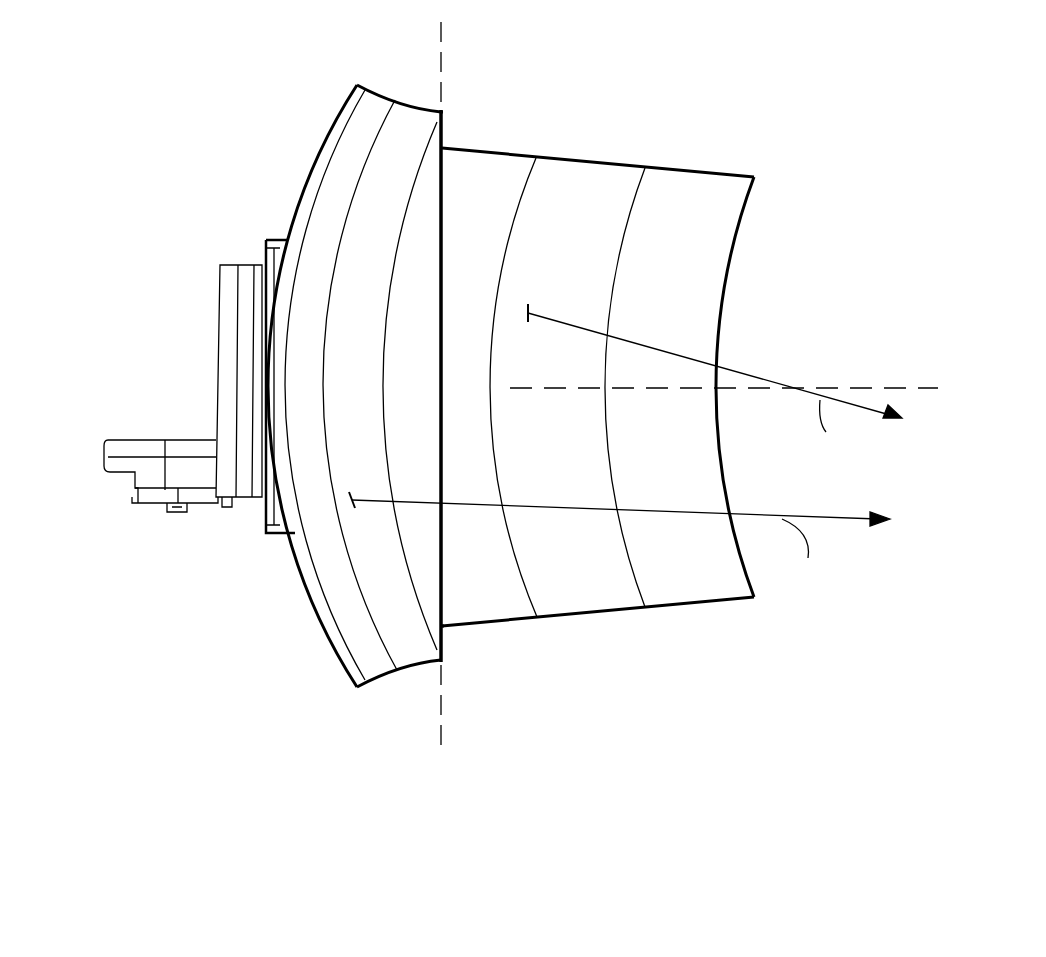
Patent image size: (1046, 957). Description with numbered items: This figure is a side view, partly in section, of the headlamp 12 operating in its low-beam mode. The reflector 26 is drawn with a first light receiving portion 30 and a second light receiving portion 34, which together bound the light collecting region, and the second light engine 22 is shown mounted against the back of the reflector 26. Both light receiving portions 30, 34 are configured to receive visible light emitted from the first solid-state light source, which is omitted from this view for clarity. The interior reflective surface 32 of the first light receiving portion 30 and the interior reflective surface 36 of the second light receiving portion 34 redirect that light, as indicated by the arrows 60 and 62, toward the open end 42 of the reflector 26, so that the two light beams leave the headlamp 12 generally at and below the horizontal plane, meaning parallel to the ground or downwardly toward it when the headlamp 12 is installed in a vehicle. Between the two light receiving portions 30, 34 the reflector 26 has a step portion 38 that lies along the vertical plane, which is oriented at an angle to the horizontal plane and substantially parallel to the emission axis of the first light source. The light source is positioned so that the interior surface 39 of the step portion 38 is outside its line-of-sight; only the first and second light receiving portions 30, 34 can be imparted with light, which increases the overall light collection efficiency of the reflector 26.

The headlamp 12 is at (80, 55).
The second light engine 22 is at (202, 325).
The reflector 26 is at (287, 126).
The first light receiving portion of reflector 30 is at (302, 594).
The interior reflective surface of first light receiving portion 32 is at (364, 373).
The second light receiving portion of reflector 34 is at (573, 152).
The interior reflective surface of second light receiving portion 36 is at (594, 260).
The step portion of reflector 38 is at (443, 130).
The interior surface of step portion 39 is at (445, 560).
The open end of reflector 42 is at (742, 218).
The reflection of light from first light receiving portion of reflector 60 is at (351, 495).
The reflection of light from second light receiving portion of reflector 62 is at (524, 305).